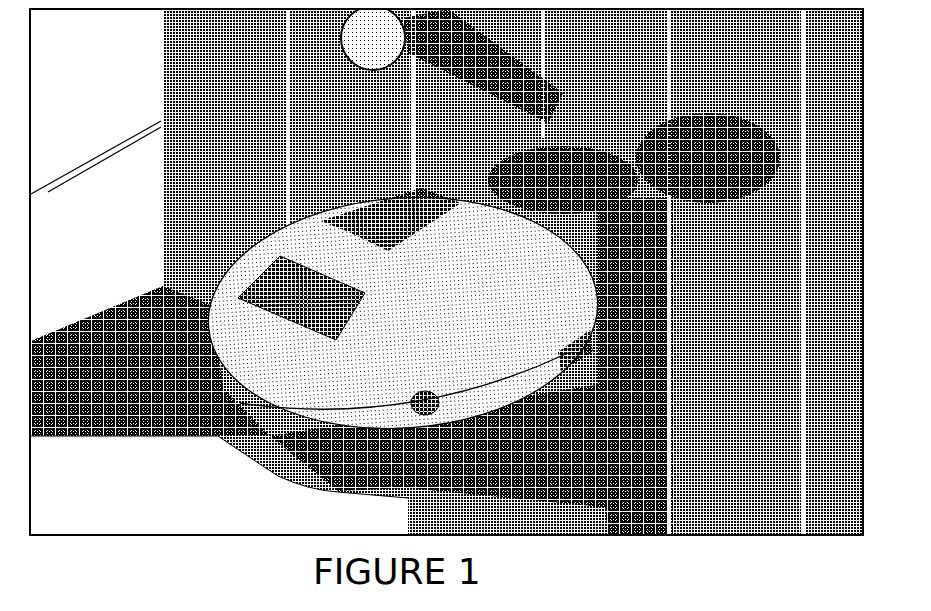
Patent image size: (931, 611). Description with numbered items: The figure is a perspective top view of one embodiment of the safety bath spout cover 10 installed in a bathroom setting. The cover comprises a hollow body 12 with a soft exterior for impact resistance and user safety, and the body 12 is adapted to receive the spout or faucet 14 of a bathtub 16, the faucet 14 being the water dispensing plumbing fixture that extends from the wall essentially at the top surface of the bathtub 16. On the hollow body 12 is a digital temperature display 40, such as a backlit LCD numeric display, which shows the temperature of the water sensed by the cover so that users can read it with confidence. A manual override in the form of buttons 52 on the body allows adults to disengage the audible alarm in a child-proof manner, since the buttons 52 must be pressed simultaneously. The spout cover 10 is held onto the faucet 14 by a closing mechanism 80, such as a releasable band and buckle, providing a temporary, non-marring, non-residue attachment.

The safety bath spout cover 10 is at (385, 297).
The hollow body 12 is at (467, 299).
The spout or faucet 14 is at (447, 272).
The bathtub 16 is at (202, 501).
The digital temperature display 40 is at (267, 298).
The manual override buttons 52 is at (430, 385).
The closing mechanism 80 is at (452, 79).